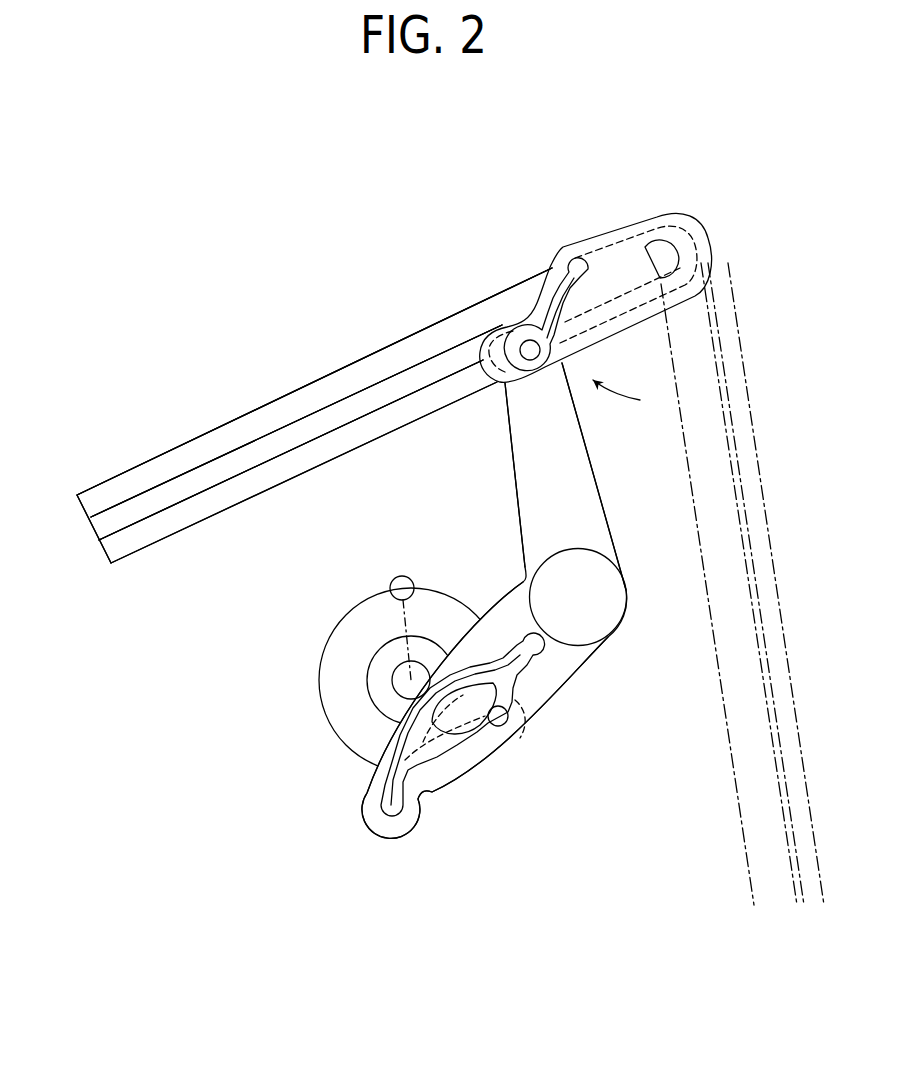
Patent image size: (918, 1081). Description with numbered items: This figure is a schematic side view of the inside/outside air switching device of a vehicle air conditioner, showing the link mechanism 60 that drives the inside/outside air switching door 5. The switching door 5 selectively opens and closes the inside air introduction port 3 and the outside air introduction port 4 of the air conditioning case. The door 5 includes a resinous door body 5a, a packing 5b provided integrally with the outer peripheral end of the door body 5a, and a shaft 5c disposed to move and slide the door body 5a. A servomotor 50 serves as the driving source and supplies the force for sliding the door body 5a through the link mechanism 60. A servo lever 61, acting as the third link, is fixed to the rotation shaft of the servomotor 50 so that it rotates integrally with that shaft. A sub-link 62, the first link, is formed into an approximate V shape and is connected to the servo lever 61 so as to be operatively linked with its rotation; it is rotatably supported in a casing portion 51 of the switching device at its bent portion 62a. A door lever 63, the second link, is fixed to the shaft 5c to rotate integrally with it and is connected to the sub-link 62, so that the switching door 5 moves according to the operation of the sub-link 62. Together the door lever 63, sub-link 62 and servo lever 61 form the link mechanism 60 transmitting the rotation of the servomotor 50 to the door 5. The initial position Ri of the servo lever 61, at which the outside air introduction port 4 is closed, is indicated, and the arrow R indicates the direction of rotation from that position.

The inside air introduction port 3 is at (777, 456).
The outside air introduction port 4 is at (410, 335).
The inside/outside air switching door 5 is at (87, 483).
The door body 5a is at (183, 490).
The packing 5b is at (222, 445).
The shaft 5c is at (668, 256).
The servomotor 50 is at (325, 713).
The casing portion 51 is at (752, 414).
The link mechanism 60 is at (576, 684).
The servo lever 61 is at (500, 660).
The sub-link 62 is at (594, 470).
The bent portion 62a is at (613, 613).
The door lever 63 is at (623, 250).
The initial position Ri is at (403, 573).
The rotation direction R is at (397, 543).